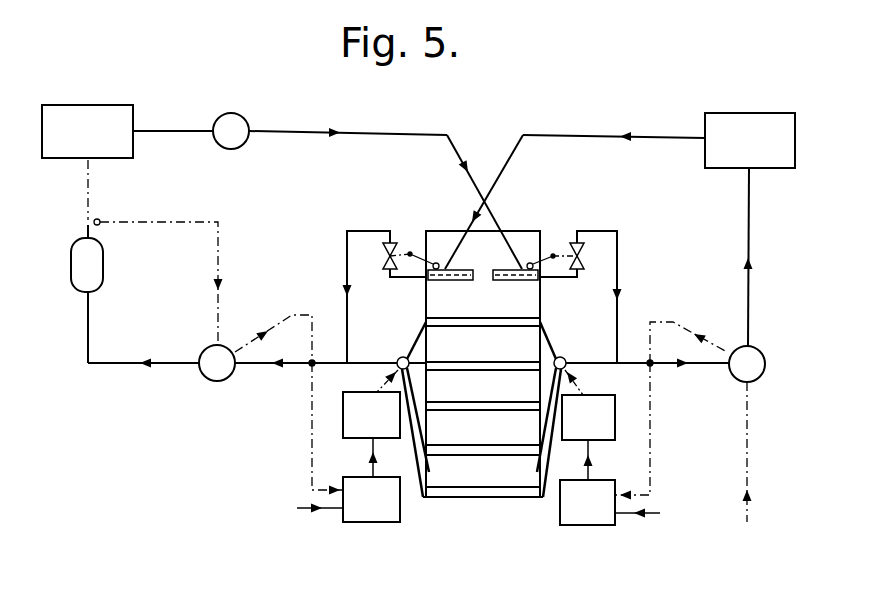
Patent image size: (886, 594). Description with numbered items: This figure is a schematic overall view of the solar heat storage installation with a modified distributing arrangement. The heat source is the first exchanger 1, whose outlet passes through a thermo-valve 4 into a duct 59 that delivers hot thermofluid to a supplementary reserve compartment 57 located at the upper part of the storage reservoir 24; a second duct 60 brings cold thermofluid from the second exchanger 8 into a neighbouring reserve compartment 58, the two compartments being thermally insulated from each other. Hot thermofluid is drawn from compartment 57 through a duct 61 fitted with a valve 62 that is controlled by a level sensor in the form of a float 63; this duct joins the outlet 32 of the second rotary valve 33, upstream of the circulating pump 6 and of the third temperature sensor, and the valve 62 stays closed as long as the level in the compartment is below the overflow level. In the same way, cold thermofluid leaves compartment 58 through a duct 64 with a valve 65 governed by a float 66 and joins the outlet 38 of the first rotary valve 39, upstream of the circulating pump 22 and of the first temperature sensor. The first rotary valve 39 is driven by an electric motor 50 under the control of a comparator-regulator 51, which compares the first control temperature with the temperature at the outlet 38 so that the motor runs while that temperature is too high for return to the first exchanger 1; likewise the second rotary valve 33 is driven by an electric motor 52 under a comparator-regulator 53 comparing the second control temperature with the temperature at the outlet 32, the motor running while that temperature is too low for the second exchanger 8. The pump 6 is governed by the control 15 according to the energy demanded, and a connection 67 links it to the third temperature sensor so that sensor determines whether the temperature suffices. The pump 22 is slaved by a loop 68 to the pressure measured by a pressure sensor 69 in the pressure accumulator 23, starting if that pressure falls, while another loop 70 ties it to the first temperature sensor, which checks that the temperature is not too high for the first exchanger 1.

The first exchanger 1 is at (105, 120).
The thermo-valve 4 is at (233, 125).
The second exchanger 8 is at (758, 120).
The circulating pump 6 is at (745, 378).
The control circuit 15 is at (745, 446).
The circulating pump 22 is at (218, 382).
The pressure accumulator 23 is at (104, 263).
The storage reservoir 24 is at (543, 330).
The outlet of the second rotary valve 32 is at (628, 361).
The second rotary valve 33 is at (567, 362).
The outlet of the first rotary valve 38 is at (364, 361).
The first rotary valve 39 is at (402, 356).
The electric motor 50 is at (390, 428).
The comparator-regulator 51 is at (362, 516).
The electric motor 52 is at (592, 430).
The comparator-regulator 53 is at (590, 518).
The supplementary reserve compartment 57 is at (512, 282).
The supplementary reserve compartment 58 is at (452, 282).
The duct 59 is at (379, 134).
The duct 60 is at (581, 136).
The duct 61 is at (619, 273).
The valve 62 is at (580, 268).
The float 63 is at (531, 262).
The duct 64 is at (346, 262).
The valve 65 is at (386, 266).
The float 66 is at (434, 262).
The connection 67 is at (684, 322).
The loop 68 is at (215, 220).
The pressure sensor 69 is at (100, 219).
The loop 70 is at (267, 326).